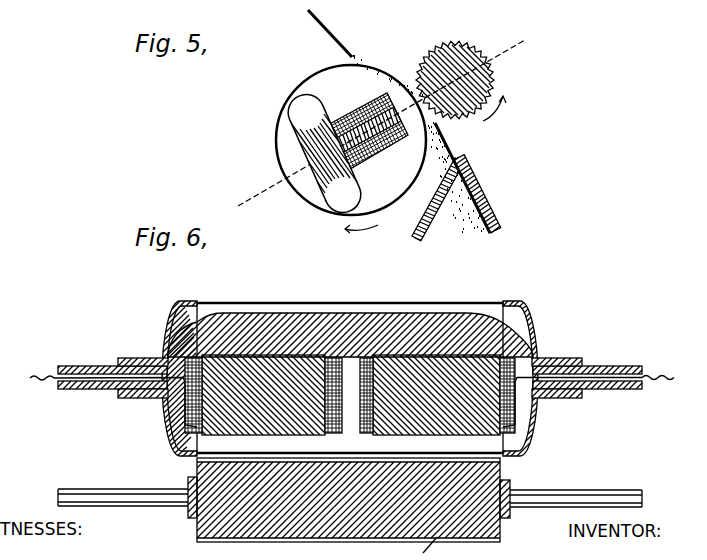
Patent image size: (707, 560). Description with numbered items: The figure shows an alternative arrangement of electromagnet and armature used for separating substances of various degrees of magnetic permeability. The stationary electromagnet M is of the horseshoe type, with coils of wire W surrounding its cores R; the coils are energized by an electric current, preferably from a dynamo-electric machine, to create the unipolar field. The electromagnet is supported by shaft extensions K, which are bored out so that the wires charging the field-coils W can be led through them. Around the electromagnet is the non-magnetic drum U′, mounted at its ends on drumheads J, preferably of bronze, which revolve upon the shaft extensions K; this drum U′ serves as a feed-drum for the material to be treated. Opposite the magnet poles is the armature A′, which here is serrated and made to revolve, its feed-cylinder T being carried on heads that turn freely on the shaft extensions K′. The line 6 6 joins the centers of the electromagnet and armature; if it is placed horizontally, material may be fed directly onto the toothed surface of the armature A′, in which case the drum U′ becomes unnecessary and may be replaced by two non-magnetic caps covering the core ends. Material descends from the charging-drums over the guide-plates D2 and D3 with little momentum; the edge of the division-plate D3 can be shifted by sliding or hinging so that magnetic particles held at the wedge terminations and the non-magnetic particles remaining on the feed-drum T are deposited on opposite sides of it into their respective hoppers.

In FIG. 5, the line 6 6 is at (250, 177).
In FIG. 5, the guide-plate D2 is at (331, 35).
In FIG. 5, the division-plate D3 is at (474, 188).
In FIG. 5, the non-magnetic drum U′ is at (298, 85).
In FIG. 6, the non-magnetic drum U′ is at (350, 368).
In FIG. 5, the electromagnet M is at (310, 120).
In FIG. 6, the electromagnet M is at (350, 323).
In FIG. 5, the core R is at (358, 130).
In FIG. 6, the core R is at (350, 395).
In FIG. 5, the field-coil W is at (399, 150).
In FIG. 5, the toothed armature A′ is at (443, 50).
In FIG. 6, the toothed armature A′ is at (349, 500).
In FIG. 5, the shaft extension K′ is at (479, 50).
In FIG. 6, the shaft extension K′ is at (130, 480).
In FIG. 6, the shaft extension K is at (106, 366).
In FIG. 5, the feed-cylinder T is at (493, 80).
In FIG. 6, the drumhead J is at (165, 318).